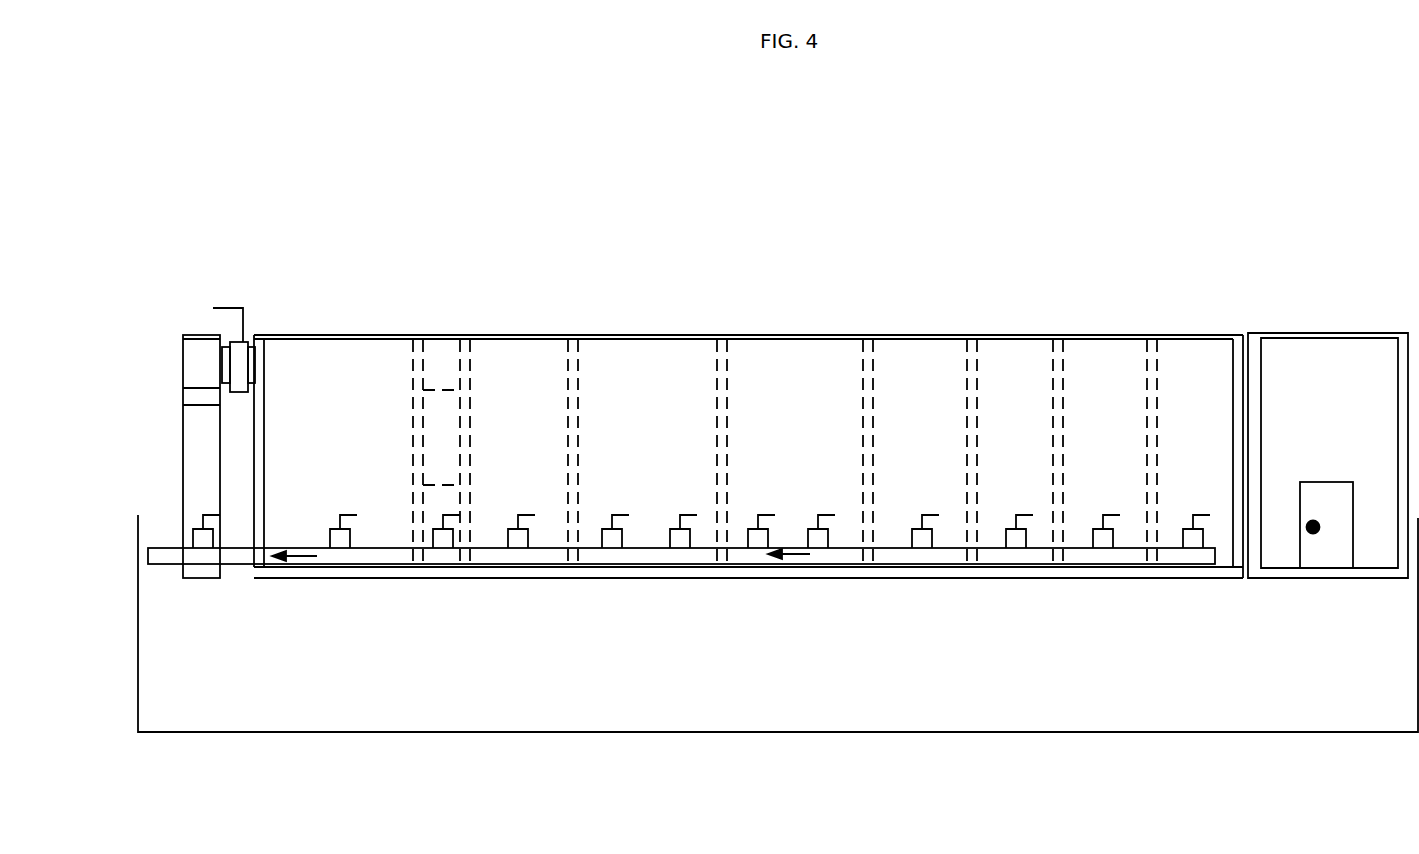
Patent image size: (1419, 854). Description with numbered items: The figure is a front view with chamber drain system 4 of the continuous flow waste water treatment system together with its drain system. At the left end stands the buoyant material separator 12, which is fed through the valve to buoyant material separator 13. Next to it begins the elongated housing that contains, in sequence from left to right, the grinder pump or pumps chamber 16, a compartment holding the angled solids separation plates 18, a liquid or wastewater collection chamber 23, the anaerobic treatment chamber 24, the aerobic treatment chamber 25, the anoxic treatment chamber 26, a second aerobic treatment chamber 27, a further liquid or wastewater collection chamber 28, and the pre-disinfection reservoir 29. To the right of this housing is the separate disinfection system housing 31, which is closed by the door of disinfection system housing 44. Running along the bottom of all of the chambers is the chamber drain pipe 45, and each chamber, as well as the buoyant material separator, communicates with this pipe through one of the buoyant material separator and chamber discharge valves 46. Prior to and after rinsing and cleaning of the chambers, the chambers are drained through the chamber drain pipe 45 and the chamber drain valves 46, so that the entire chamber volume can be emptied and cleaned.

The front view with chamber drain system 4 is at (775, 732).
The buoyant material separator 12 is at (202, 335).
The valve to buoyant material separator 13 is at (245, 338).
The grinder pump or pumps chamber 16 is at (340, 335).
The angled solids separation plates 18 is at (448, 390).
The liquid or wastewater collection chamber 23 is at (519, 335).
The anaerobic treatment chamber 24 is at (643, 335).
The aerobic treatment chamber 25 is at (797, 335).
The anoxic treatment chamber 26 is at (920, 335).
The aerobic treatment chamber 27 is at (1015, 335).
The liquid or wastewater collection chamber 28 is at (1103, 335).
The pre-disinfection reservoir 29 is at (1196, 335).
The disinfection system housing 31 is at (1320, 333).
The door of disinfection system housing 44 is at (1327, 562).
The chamber drain pipe 45 is at (240, 563).
The buoyant material separator and chamber discharge valves 46 is at (205, 564).